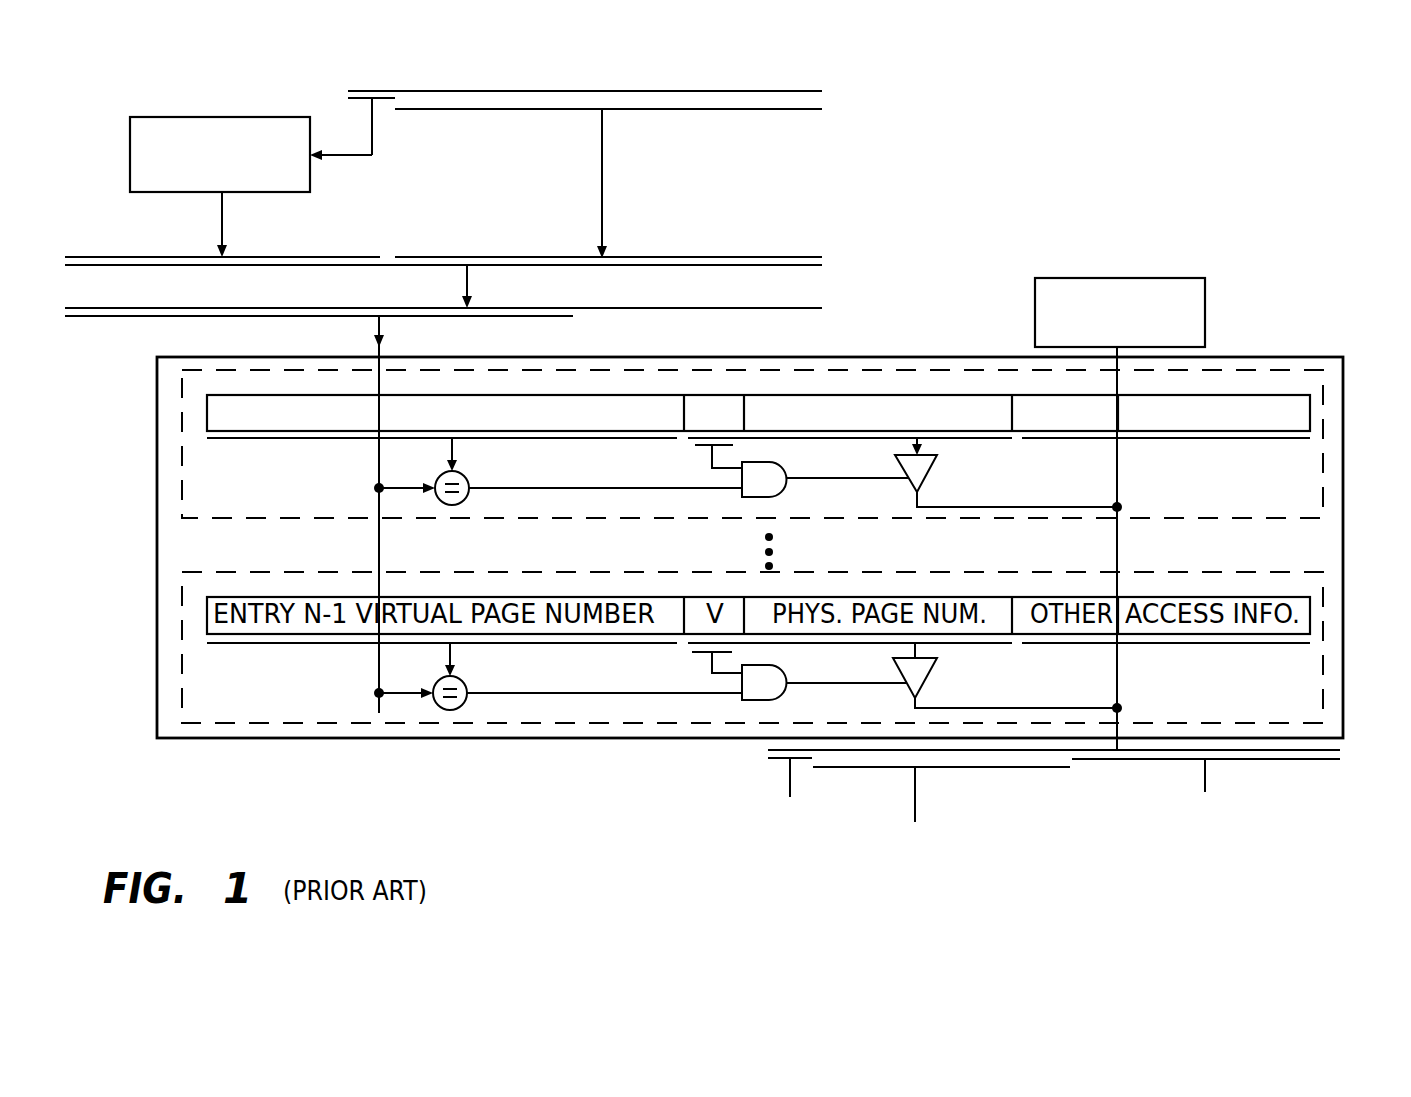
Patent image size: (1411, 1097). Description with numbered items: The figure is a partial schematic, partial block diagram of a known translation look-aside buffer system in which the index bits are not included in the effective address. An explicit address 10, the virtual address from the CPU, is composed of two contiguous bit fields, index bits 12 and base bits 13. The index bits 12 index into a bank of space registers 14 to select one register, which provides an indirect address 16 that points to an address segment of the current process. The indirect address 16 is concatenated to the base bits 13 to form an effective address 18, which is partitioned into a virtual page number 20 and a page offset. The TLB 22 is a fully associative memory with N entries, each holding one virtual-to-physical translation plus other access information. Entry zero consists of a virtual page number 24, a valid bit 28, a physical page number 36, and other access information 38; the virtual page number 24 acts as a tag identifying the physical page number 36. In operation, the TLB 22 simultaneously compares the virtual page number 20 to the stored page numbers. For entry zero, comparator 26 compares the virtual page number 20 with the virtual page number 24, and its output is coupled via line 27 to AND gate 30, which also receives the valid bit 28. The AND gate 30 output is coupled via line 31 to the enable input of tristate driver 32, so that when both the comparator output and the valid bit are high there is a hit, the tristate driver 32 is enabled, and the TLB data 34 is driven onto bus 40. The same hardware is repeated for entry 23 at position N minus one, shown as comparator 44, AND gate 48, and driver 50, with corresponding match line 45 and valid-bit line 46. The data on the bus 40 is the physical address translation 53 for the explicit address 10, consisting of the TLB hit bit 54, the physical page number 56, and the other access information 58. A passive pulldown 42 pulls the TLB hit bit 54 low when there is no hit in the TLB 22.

The explicit address 10 is at (822, 91).
The index bits 12 is at (357, 102).
The base bits 13 is at (692, 109).
The space registers 14 is at (187, 117).
The indirect address 16 is at (117, 257).
The effective address 18 is at (807, 266).
The virtual page number 20 is at (128, 318).
The translation look-aside buffer 22 is at (1327, 357).
The entry 23 is at (1273, 520).
The virtual page number 24 is at (280, 440).
The comparator 26 is at (437, 476).
The line 27 is at (530, 463).
The valid bit 28 is at (695, 447).
The AND gate 30 is at (782, 492).
The line 31 is at (838, 477).
The tristate driver 32 is at (933, 462).
The TLB data 34 is at (1213, 442).
The physical page number 36 is at (897, 395).
The other access information 38 is at (1263, 395).
The bus 40 is at (1117, 545).
The passive pulldown 42 is at (1205, 310).
The comparator 44 is at (437, 681).
The entry N-1 match line 45 is at (523, 693).
The entry N-1 valid bit line 46 is at (693, 655).
The AND gate 48 is at (782, 695).
The driver 50 is at (937, 670).
The physical address translation 53 is at (1330, 752).
The TLB hit bit 54 is at (790, 780).
The physical page number 56 is at (915, 790).
The other access information 58 is at (1205, 778).